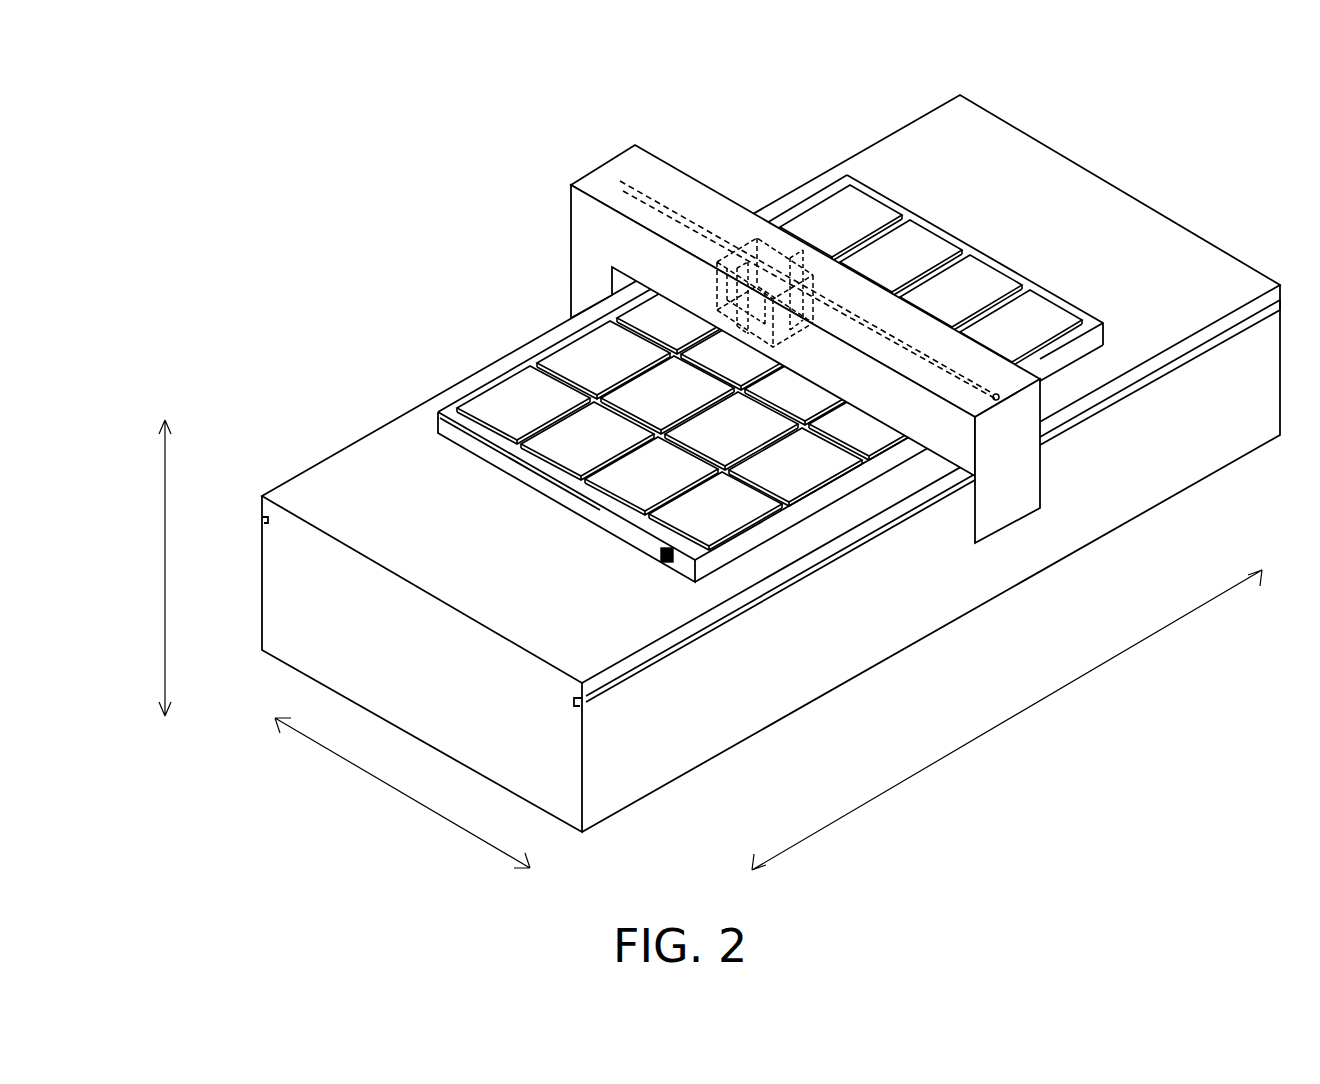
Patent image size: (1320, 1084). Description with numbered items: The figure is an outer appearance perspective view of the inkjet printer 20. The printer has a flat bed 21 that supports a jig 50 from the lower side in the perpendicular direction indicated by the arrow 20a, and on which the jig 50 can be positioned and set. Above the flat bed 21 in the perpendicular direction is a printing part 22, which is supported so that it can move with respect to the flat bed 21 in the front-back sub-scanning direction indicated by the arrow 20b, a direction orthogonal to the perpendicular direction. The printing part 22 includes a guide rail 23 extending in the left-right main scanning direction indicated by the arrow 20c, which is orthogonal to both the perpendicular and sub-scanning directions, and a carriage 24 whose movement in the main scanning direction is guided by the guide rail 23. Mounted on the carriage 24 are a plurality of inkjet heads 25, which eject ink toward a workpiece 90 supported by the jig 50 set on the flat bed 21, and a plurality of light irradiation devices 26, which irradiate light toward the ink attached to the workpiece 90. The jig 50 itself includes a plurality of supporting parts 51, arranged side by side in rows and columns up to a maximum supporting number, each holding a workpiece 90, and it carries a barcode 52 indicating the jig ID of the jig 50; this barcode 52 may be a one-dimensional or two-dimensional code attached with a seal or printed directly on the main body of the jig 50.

The inkjet printer 20 is at (370, 147).
The arrow indicating perpendicular direction 20a is at (145, 568).
The arrow indicating sub-scanning direction 20b is at (1060, 705).
The arrow indicating main scanning direction 20c is at (398, 798).
The flat bed 21 is at (370, 460).
The printing part 22 is at (607, 237).
The guide rail 23 is at (622, 178).
The carriage 24 is at (808, 288).
The inkjet head 25 is at (760, 262).
The light irradiation device 26 is at (742, 265).
The jig 50 is at (455, 400).
The supporting part 51 is at (440, 420).
The barcode 52 is at (672, 562).
The workpiece 90 is at (510, 405).